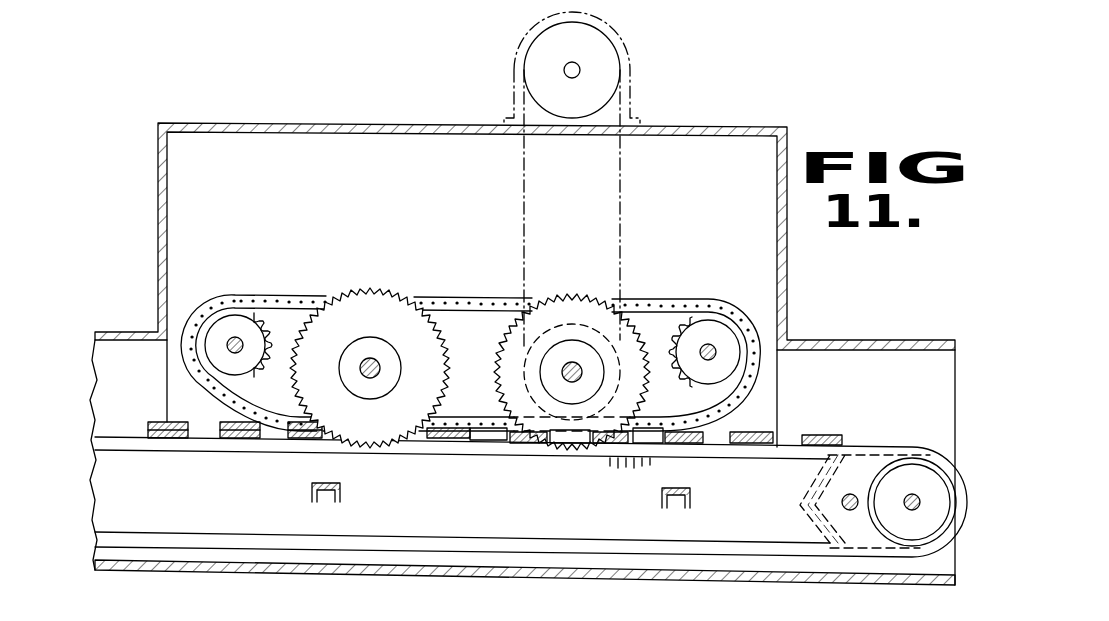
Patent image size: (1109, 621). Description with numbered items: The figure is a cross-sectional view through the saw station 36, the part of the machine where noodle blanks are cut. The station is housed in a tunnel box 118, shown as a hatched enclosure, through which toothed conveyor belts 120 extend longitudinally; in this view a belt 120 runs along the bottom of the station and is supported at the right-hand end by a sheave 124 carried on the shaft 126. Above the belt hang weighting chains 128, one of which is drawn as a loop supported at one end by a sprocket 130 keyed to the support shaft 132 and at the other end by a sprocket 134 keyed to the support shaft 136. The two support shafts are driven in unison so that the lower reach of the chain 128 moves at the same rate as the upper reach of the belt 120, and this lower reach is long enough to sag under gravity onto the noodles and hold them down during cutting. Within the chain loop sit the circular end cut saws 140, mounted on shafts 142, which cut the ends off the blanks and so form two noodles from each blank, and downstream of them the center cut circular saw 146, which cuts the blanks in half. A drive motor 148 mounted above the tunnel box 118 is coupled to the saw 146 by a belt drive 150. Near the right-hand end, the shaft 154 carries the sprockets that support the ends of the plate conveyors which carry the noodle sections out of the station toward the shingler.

The saw station 36 is at (714, 124).
The tunnel box 118 is at (765, 129).
The toothed conveyor belts 120 is at (172, 446).
The sheaves 124 is at (888, 512).
The shaft 126 is at (912, 502).
The weighting chains 128 is at (670, 304).
The sprockets 130 is at (700, 322).
The support shaft 132 is at (716, 352).
The sprockets 134 is at (228, 298).
The support shaft 136 is at (238, 338).
The end cut saws 140 is at (383, 292).
The shafts 142 is at (370, 358).
The center cut circular saw 146 is at (600, 310).
The drive motor 148 is at (633, 60).
The belt drive 150 is at (624, 198).
The shaft 154 is at (845, 503).